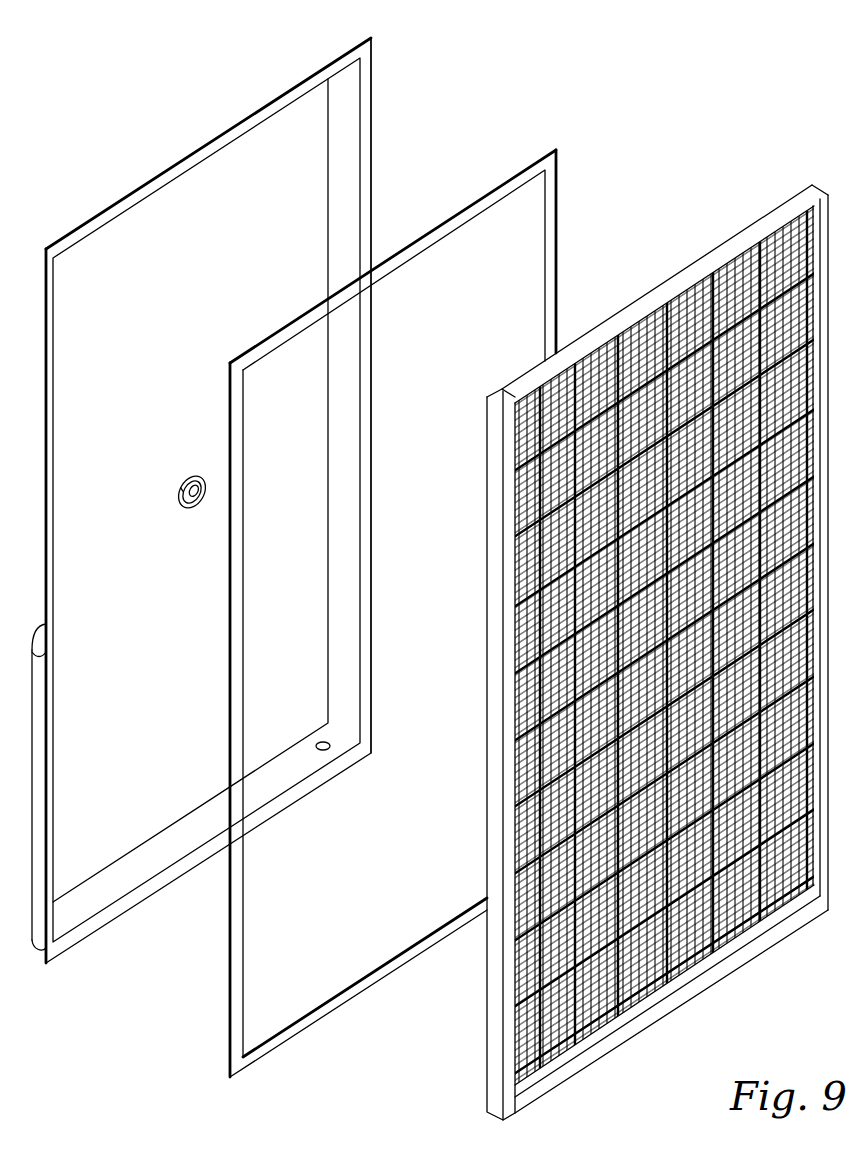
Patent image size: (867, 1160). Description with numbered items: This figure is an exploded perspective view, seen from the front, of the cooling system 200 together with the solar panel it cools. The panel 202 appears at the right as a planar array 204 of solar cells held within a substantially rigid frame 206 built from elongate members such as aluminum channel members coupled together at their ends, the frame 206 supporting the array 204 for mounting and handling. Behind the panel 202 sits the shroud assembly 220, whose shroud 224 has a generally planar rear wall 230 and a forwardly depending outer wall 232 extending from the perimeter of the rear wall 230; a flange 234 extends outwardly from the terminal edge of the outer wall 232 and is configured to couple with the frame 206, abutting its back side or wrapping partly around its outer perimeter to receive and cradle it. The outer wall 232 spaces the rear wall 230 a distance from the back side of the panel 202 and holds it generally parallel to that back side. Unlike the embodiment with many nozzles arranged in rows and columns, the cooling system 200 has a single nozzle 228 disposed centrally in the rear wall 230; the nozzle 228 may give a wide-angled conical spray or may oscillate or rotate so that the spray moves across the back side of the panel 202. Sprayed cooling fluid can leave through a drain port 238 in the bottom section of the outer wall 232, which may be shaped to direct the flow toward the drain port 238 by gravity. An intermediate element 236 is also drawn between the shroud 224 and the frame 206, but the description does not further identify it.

The cooling system 200 is at (623, 40).
The panel 202 is at (658, 639).
The planar array of solar cells 204 is at (727, 307).
The frame 206 is at (628, 303).
The shroud assembly 220 is at (244, 500).
The shroud 224 is at (218, 139).
The nozzle 228 is at (184, 509).
The rear wall 230 is at (305, 162).
The outer wall 232 is at (343, 218).
The flange 234 is at (372, 327).
The second panel 236 is at (535, 160).
The drain port 238 is at (323, 752).